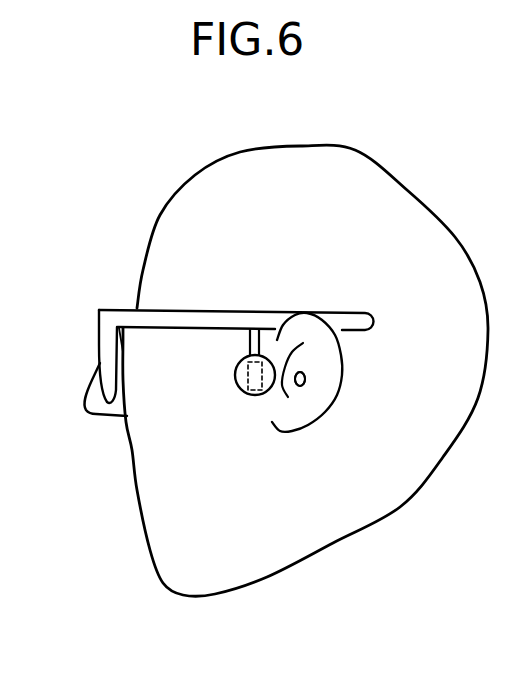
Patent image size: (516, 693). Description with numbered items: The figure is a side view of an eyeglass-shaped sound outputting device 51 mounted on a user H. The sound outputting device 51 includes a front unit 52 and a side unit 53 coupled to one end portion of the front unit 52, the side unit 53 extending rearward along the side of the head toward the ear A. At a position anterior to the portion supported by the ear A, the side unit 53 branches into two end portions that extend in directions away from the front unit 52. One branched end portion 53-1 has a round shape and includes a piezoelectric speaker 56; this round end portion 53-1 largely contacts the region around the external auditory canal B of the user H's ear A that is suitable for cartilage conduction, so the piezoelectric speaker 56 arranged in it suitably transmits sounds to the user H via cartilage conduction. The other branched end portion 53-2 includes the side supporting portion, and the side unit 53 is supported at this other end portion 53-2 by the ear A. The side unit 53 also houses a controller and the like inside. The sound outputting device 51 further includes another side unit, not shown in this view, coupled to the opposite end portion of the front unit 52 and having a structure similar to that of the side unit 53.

The user H is at (375, 180).
The sound outputting device 51 is at (103, 222).
The front unit 52 is at (99, 342).
The side unit 53 is at (201, 324).
The one branched end portion 53-1 is at (250, 396).
The other branched end portion 53-2 is at (348, 318).
The piezoelectric speaker 56 is at (248, 378).
The ear A is at (342, 375).
The external auditory canal B is at (303, 385).